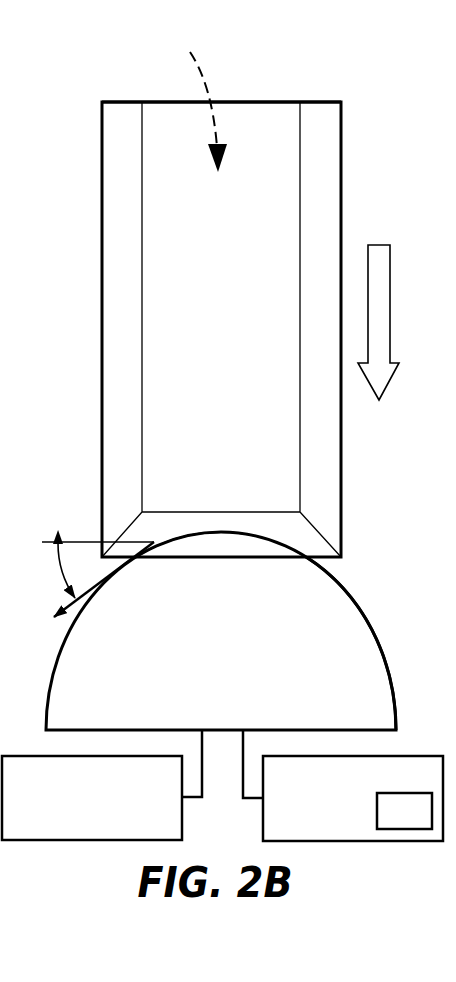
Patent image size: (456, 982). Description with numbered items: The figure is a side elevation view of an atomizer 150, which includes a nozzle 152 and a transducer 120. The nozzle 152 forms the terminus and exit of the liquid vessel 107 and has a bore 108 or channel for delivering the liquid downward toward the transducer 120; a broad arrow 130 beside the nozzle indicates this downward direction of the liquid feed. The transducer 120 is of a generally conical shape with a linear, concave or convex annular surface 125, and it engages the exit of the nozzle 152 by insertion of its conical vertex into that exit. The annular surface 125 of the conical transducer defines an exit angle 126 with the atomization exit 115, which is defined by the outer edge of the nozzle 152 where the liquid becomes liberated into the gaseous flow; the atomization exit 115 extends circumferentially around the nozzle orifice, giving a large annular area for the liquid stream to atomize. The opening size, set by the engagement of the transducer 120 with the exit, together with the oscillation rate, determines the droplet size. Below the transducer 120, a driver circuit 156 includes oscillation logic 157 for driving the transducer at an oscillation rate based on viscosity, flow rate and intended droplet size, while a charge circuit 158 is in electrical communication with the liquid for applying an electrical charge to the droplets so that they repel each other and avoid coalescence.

The liquid vessel 107 is at (186, 52).
The bore 108 is at (247, 101).
The atomization exit 115 is at (334, 567).
The transducer 120 is at (247, 688).
The annular surface 125 is at (394, 673).
The exit angle 126 is at (55, 570).
The direction of movement 130 is at (391, 312).
The atomizer 150 is at (295, 78).
The nozzle 152 is at (342, 167).
The driver circuit 156 is at (287, 821).
The oscillation logic 157 is at (426, 822).
The charge circuit 158 is at (72, 821).